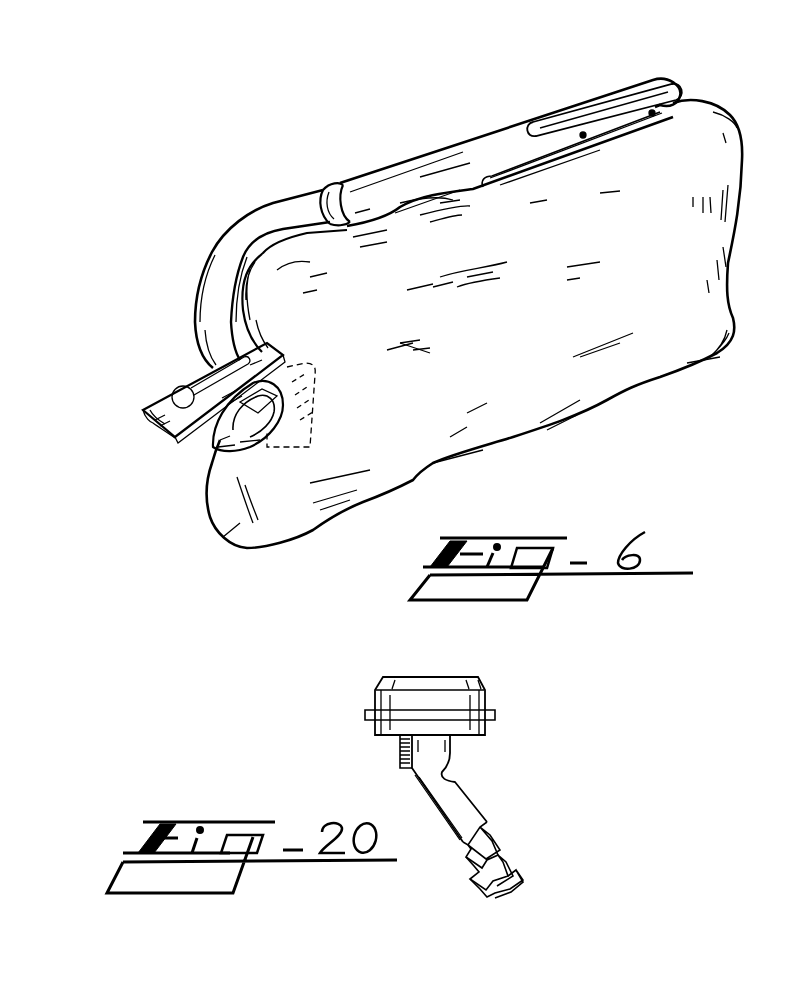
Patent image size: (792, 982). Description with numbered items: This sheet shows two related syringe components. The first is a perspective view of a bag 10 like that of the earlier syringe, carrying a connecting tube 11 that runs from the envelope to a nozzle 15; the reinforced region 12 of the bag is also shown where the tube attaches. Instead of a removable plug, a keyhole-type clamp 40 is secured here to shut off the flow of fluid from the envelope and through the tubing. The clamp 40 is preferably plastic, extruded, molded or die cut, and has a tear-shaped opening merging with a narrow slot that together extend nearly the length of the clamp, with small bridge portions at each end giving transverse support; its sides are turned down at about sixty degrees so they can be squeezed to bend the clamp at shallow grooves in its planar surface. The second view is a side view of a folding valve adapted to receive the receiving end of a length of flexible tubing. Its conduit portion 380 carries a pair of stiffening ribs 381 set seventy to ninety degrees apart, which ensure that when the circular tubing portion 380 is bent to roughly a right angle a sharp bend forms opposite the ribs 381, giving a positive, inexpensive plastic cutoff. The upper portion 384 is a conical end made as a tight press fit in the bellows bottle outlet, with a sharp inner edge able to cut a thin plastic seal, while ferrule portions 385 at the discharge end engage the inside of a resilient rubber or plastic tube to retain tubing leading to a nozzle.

In FIG. 6, the bag 10 is at (657, 283).
In FIG. 6, the connecting tube 11 is at (274, 204).
In FIG. 6, the reinforced region 12 is at (217, 443).
In FIG. 6, the nozzle 15 is at (503, 137).
In FIG. 6, the keyhole-type clamp 40 is at (130, 352).
In FIG. 20, the conduit portion 380 is at (470, 794).
In FIG. 20, the stiffening ribs 381 is at (400, 761).
In FIG. 20, the upper portion 384 is at (375, 701).
In FIG. 20, the ferrule portions 385 is at (497, 838).